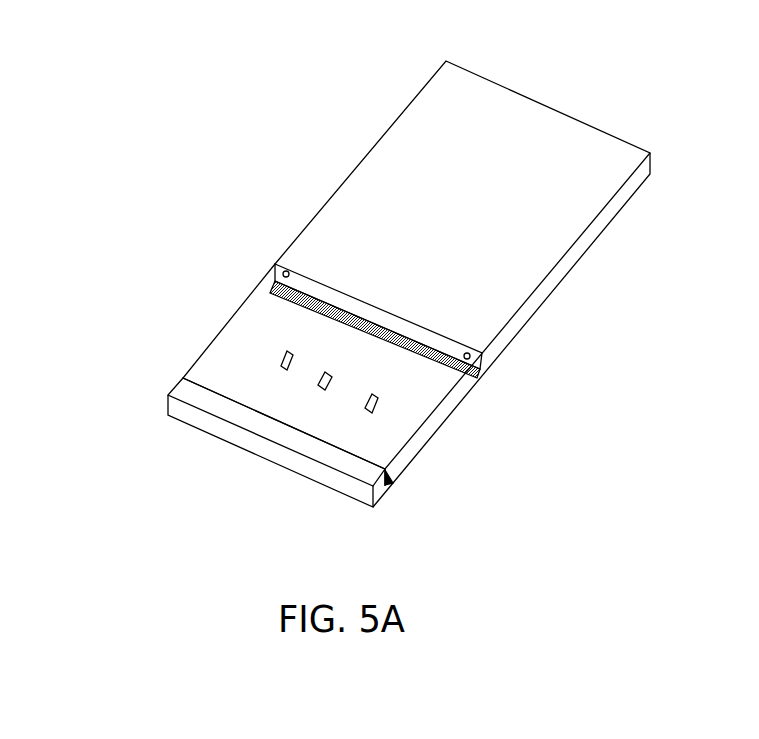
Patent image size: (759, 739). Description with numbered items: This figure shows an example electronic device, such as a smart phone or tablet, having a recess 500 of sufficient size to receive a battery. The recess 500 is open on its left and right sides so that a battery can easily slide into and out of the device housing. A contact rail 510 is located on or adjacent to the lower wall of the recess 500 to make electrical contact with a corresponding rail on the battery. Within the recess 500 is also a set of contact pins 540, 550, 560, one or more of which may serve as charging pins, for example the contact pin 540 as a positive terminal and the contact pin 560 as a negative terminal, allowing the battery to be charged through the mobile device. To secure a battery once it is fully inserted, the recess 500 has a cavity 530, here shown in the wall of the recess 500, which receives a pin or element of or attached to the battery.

The recess 500 is at (247, 328).
The contact rail 510 is at (477, 380).
The cavity 530 is at (275, 263).
The contact pin 540 is at (280, 367).
The contact pin 550 is at (318, 386).
The contact pin 560 is at (365, 410).